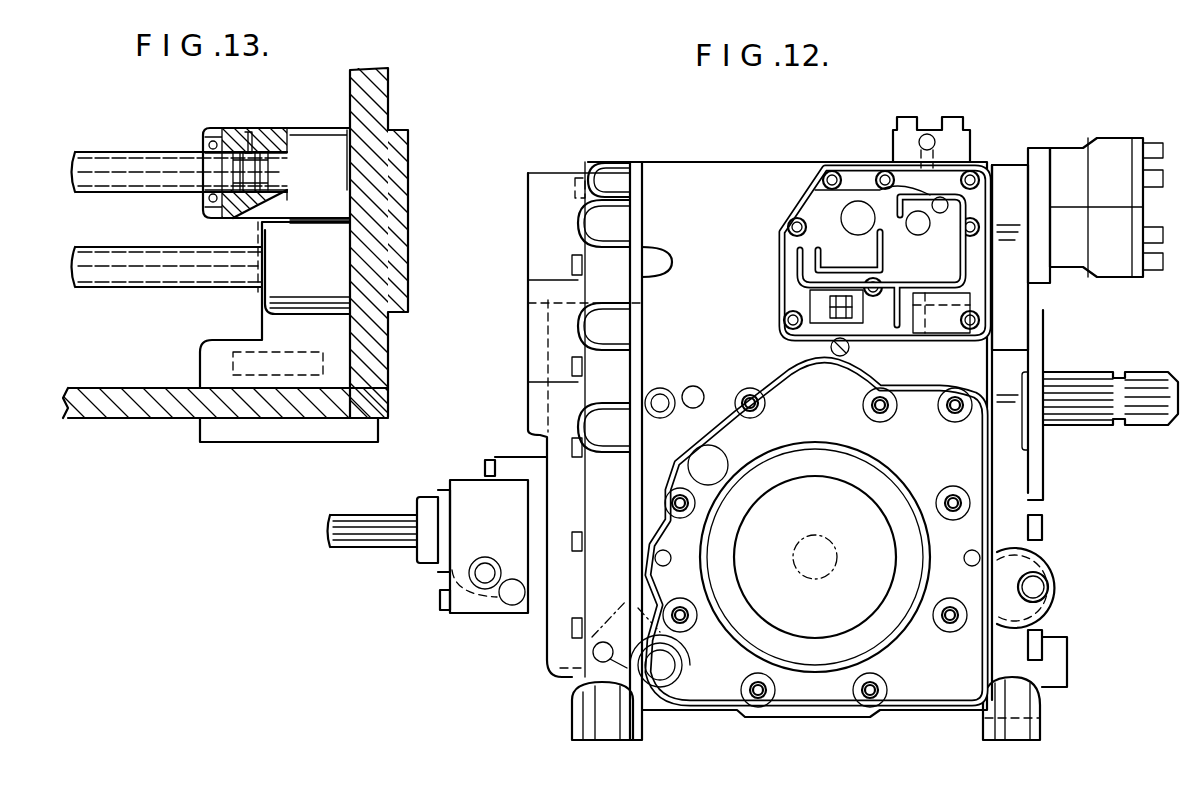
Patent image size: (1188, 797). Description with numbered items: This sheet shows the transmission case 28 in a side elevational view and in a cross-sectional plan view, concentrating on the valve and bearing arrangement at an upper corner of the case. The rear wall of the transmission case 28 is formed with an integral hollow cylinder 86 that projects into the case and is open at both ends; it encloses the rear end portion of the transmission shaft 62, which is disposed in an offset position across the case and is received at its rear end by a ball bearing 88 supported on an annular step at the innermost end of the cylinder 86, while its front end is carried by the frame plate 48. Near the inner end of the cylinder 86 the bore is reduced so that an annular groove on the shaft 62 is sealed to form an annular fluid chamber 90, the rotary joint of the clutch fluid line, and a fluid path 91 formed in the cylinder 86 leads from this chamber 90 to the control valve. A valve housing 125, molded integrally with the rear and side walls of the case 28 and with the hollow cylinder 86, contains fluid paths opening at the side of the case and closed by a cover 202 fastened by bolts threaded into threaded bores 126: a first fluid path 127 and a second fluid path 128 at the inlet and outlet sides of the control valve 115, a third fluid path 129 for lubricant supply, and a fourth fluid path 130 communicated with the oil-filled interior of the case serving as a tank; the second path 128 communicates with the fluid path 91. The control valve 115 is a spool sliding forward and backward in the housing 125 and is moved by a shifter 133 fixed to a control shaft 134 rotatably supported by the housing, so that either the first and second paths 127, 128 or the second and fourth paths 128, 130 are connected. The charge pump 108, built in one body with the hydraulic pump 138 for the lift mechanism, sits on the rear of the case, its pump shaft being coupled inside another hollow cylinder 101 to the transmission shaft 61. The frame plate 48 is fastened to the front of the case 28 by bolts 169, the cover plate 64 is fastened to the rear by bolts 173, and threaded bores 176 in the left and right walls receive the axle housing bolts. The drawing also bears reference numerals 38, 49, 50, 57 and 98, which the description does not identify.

In FIG. 13, the transmission case 28 is at (160, 405).
In FIG. 12, the output shaft 38 is at (1078, 400).
In FIG. 12, the frame plate 48 is at (556, 195).
In FIG. 12, the pump 49 is at (478, 497).
In FIG. 12, the pump shaft 50 is at (392, 532).
In FIG. 12, the bore 57 is at (816, 545).
In FIG. 13, the transmission shaft 61 is at (130, 272).
In FIG. 13, the transmission shaft 62 is at (123, 160).
In FIG. 12, the cover plate 64 is at (1000, 485).
In FIG. 13, the hollow cylinder 86 is at (311, 140).
In FIG. 13, the ball bearing 88 is at (215, 131).
In FIG. 13, the annular fluid chamber 90 is at (270, 205).
In FIG. 13, the fluid path 91 is at (262, 150).
In FIG. 13, the wall 98 is at (398, 158).
In FIG. 12, the wall 98 is at (1003, 198).
In FIG. 13, the hollow cylinder 101 is at (345, 300).
In FIG. 12, the charge pump 108 is at (1050, 170).
In FIG. 13, the control valve 115 is at (275, 365).
In FIG. 12, the control valve 115 is at (878, 325).
In FIG. 13, the valve housing 125 is at (262, 328).
In FIG. 12, the valve housing 125 is at (851, 172).
In FIG. 12, the threaded bores 126 is at (972, 225).
In FIG. 12, the first fluid path 127 is at (965, 262).
In FIG. 12, the second fluid path 128 is at (922, 278).
In FIG. 12, the third fluid path 129 is at (812, 205).
In FIG. 12, the fourth fluid path 130 is at (935, 317).
In FIG. 12, the shifter 133 is at (828, 325).
In FIG. 12, the control shaft 134 is at (838, 357).
In FIG. 12, the hydraulic pump 138 is at (1105, 152).
In FIG. 12, the bolts 169 is at (572, 364).
In FIG. 12, the bolts 173 is at (1035, 530).
In FIG. 12, the threaded bores 176 is at (745, 396).
In FIG. 13, the cover 202 is at (340, 428).